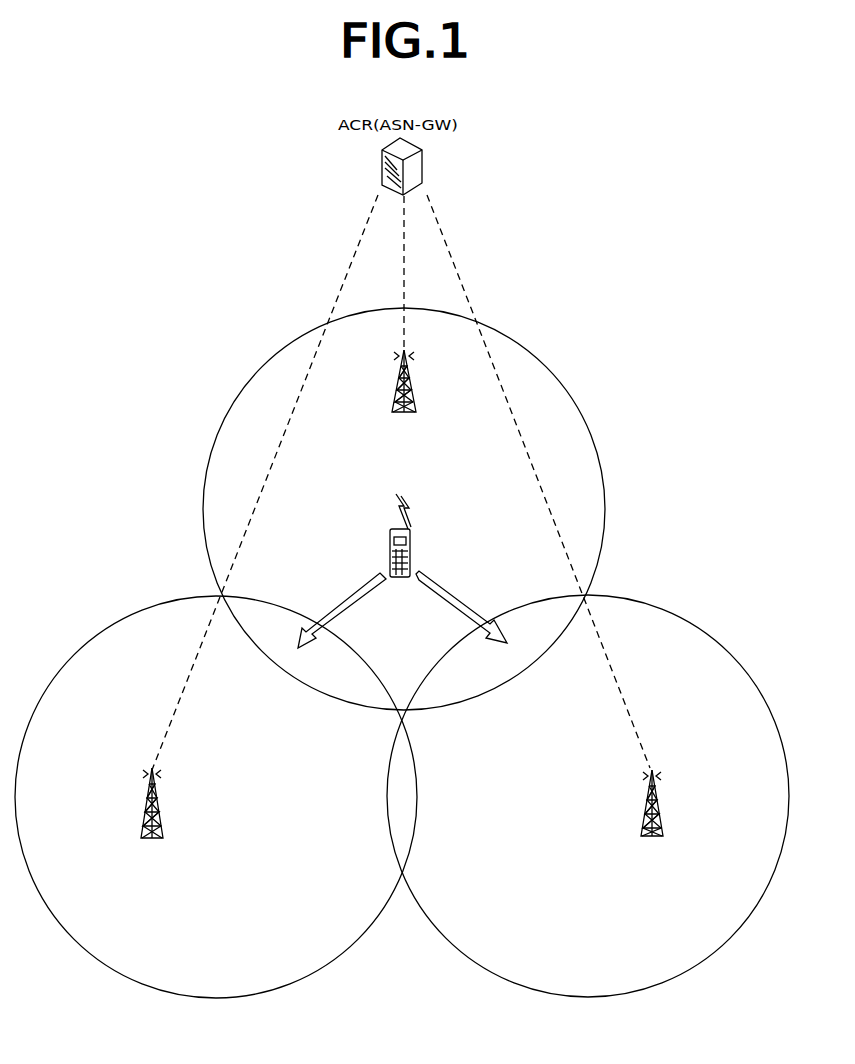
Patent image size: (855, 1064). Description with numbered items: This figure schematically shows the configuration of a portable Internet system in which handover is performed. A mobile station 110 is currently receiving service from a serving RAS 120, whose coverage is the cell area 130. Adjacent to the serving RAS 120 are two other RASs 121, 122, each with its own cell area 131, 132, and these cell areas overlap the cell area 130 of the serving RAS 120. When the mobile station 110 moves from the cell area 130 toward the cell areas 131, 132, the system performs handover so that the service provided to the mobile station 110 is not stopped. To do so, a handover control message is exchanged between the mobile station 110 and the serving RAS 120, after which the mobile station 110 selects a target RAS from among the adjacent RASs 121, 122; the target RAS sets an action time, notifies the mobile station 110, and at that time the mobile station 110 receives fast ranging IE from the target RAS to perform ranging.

The mobile station 110 is at (410, 536).
The serving RAS 120 is at (410, 376).
The RAS 121 is at (158, 800).
The RAS 122 is at (660, 800).
The cell area 130 is at (525, 345).
The cell area 131 is at (92, 640).
The cell area 132 is at (712, 633).